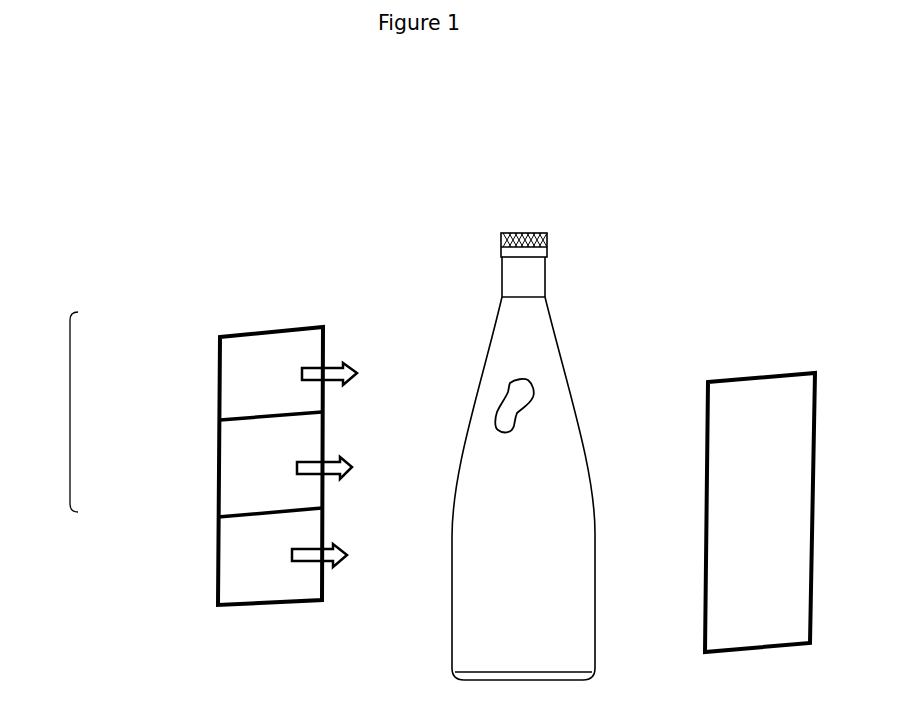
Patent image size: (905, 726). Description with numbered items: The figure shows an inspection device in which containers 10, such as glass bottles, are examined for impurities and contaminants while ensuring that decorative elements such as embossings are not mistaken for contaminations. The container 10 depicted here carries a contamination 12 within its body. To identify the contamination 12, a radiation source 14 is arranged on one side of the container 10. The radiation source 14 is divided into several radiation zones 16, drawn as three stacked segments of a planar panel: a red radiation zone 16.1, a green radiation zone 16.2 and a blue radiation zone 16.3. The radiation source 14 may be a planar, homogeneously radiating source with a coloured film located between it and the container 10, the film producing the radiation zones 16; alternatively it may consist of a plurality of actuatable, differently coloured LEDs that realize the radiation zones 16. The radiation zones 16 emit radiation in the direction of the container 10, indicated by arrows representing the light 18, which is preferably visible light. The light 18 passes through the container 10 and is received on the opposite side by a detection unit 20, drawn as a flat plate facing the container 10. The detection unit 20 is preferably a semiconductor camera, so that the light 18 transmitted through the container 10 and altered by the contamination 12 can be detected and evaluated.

The container 10 is at (513, 335).
The contamination 12 is at (510, 405).
The radiation source 14 is at (213, 352).
The radiation zones 16 is at (70, 413).
The red radiation zone 16.1 is at (240, 410).
The green radiation zone 16.2 is at (240, 492).
The blue radiation zone 16.3 is at (240, 567).
The light 18 is at (357, 375).
The detection unit 20 is at (742, 405).